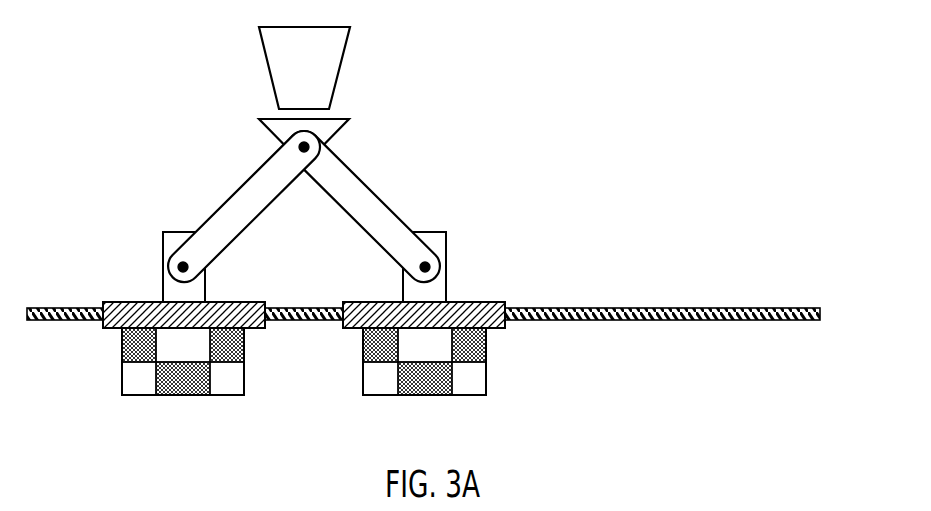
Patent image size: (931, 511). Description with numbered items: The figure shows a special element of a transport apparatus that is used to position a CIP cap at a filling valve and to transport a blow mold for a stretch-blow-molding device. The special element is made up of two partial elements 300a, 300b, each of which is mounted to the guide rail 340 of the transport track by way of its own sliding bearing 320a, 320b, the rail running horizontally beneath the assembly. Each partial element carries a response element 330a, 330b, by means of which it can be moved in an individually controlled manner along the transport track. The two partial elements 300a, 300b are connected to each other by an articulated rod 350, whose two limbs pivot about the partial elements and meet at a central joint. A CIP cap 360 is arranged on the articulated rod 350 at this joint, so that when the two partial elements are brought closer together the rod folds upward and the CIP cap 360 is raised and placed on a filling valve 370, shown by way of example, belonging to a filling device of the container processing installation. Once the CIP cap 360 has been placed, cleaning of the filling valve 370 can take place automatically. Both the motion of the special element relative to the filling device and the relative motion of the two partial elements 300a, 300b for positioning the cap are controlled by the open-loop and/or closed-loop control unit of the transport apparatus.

The partial element 300a is at (137, 293).
The partial element 300b is at (458, 291).
The sliding bearing 320a is at (258, 330).
The sliding bearing 320b is at (500, 330).
The response element 330a is at (182, 396).
The response element 330b is at (421, 396).
The guide rail 340 is at (767, 307).
The articulated rod 350 is at (322, 178).
The CIP cap 360 is at (345, 133).
The filling valve 370 is at (346, 60).